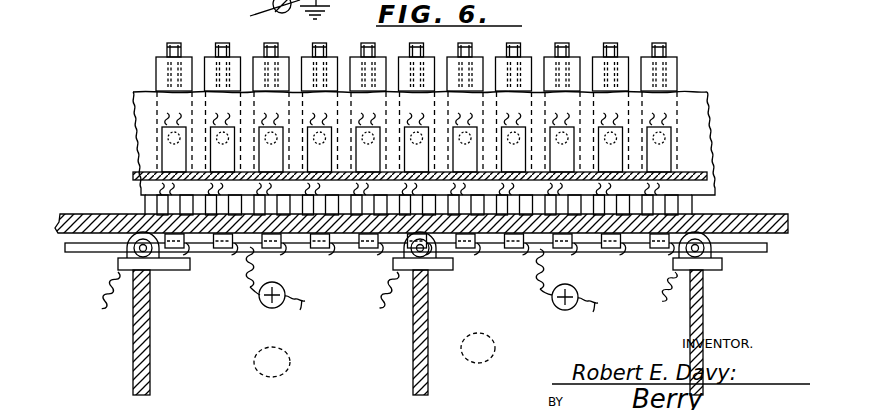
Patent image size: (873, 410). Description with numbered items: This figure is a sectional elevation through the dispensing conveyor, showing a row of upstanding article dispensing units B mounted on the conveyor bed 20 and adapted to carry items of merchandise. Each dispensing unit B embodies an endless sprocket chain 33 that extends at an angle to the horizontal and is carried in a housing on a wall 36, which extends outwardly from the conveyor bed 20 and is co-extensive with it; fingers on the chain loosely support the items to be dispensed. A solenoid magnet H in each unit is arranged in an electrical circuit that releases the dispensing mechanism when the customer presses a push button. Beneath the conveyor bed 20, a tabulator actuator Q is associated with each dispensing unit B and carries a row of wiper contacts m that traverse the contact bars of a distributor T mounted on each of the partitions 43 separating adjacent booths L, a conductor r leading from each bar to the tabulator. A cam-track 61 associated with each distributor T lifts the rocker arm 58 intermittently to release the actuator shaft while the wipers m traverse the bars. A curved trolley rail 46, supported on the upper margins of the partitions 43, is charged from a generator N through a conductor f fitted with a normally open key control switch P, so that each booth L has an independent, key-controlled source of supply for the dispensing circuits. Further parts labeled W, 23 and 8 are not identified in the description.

The endless sprocket chain 33 is at (168, 43).
The article dispensing unit B is at (147, 68).
The wall 36 is at (133, 100).
The solenoid magnet H is at (166, 136).
The weight block W is at (145, 202).
The conveyor bed 20 is at (65, 214).
The trolley rail 46 is at (78, 253).
The tabulator actuator Q is at (323, 245).
The rocker arm 58 is at (190, 253).
The wiper contact m is at (322, 256).
The roller 23 is at (158, 270).
The cam-track 61 is at (191, 272).
The partition 43 is at (133, 345).
The distributor T is at (113, 268).
The conductor r is at (666, 302).
The conductor f is at (391, 278).
The key control switch P is at (261, 314).
The booth L is at (374, 355).
The line 8 is at (212, 7).
The generator N is at (284, 11).